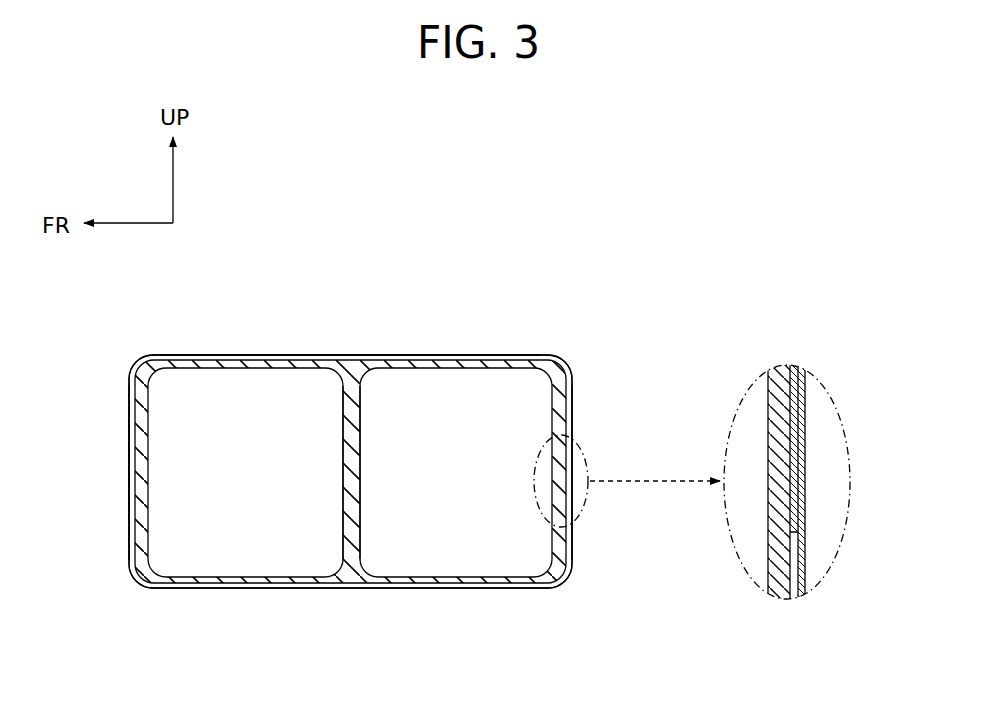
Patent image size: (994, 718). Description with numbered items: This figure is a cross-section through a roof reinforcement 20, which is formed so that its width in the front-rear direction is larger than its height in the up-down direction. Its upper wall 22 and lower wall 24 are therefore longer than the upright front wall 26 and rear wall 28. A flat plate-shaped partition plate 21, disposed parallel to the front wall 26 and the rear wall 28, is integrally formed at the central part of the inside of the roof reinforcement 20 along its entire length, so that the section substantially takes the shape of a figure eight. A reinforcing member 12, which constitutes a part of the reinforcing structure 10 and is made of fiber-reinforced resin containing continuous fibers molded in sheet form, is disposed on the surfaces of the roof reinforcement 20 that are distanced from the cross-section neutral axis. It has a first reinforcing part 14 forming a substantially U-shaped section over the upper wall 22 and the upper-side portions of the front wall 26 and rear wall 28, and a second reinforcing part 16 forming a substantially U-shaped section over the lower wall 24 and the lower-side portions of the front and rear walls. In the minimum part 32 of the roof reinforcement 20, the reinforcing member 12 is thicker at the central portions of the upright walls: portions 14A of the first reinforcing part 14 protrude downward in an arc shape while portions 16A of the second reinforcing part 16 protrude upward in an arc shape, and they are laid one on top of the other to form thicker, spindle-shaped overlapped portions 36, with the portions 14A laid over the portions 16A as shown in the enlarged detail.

The reinforcing structure 10 is at (553, 589).
The reinforcing member 12 is at (352, 352).
The first reinforcing part 14 is at (243, 357).
The portions of the first reinforcing part 14A is at (806, 438).
The second reinforcing part 16 is at (372, 590).
The portions of the second reinforcing part 16A is at (790, 486).
The roof reinforcement 20 is at (586, 326).
The partition plate 21 is at (343, 478).
The upper wall 22 is at (448, 372).
The lower wall 24 is at (275, 572).
The front wall 26 is at (148, 428).
The rear wall 28 is at (553, 407).
The minimum part 32 is at (163, 349).
The overlapped portions 36 is at (127, 470).